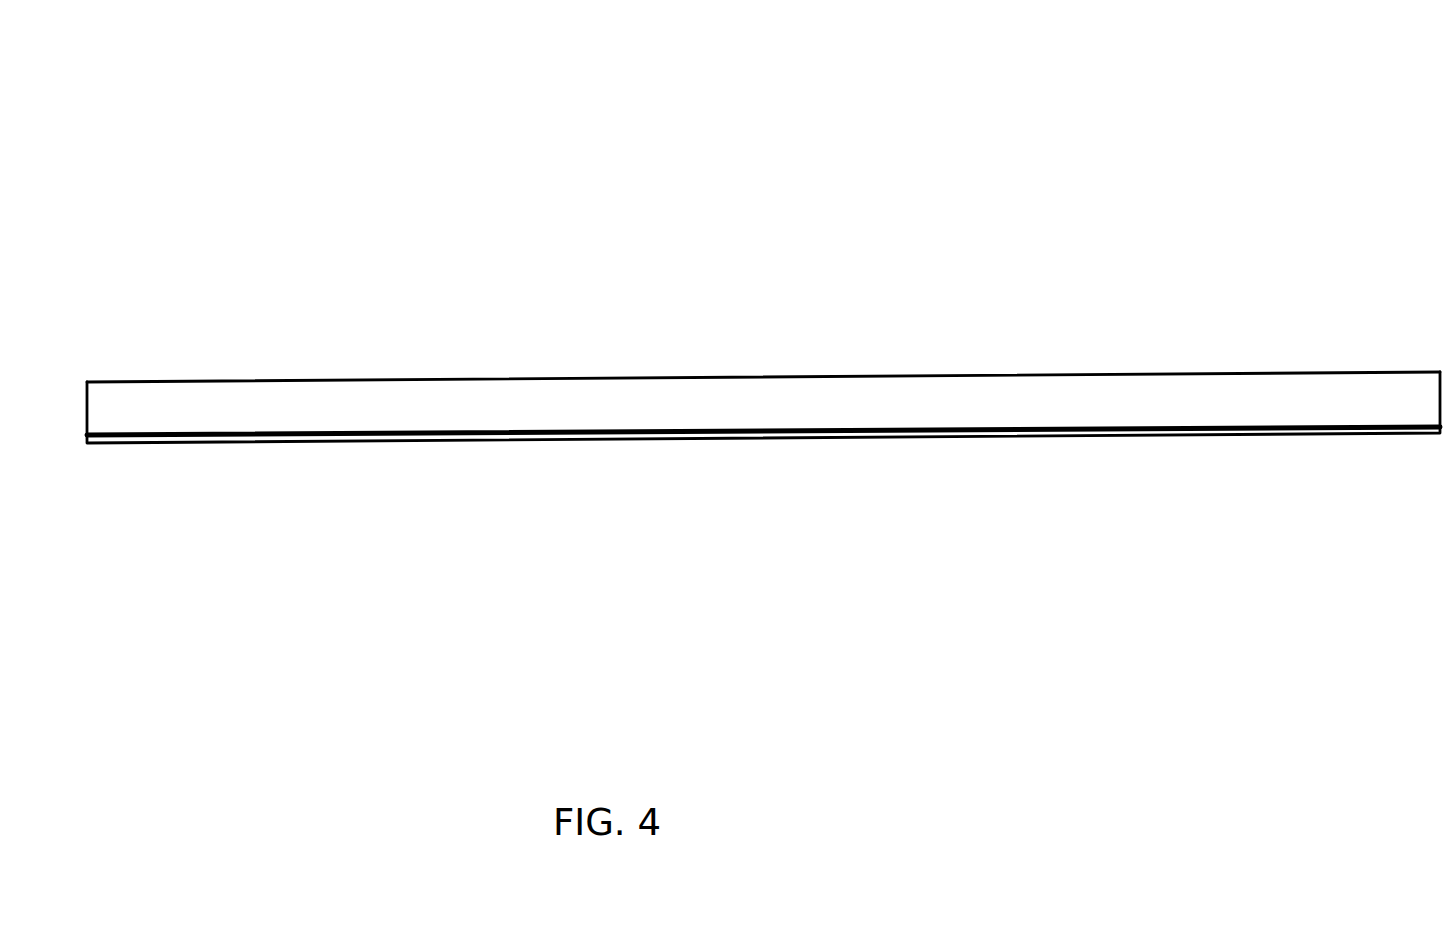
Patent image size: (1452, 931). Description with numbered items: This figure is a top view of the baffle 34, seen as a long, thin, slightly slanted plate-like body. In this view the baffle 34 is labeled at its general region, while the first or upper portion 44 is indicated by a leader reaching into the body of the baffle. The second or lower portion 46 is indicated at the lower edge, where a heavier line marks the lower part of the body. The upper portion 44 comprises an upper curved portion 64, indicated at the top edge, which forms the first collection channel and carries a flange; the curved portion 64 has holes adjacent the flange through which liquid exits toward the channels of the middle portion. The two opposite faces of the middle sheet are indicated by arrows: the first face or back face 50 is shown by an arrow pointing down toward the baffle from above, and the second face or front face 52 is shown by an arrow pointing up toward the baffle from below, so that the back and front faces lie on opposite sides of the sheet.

The baffle 34 is at (295, 153).
The first or upper portion 44 is at (522, 405).
The second or lower portion 46 is at (432, 440).
The first face or back face 50 is at (658, 272).
The second face or front face 52 is at (641, 483).
The upper curved portion 64 is at (792, 402).